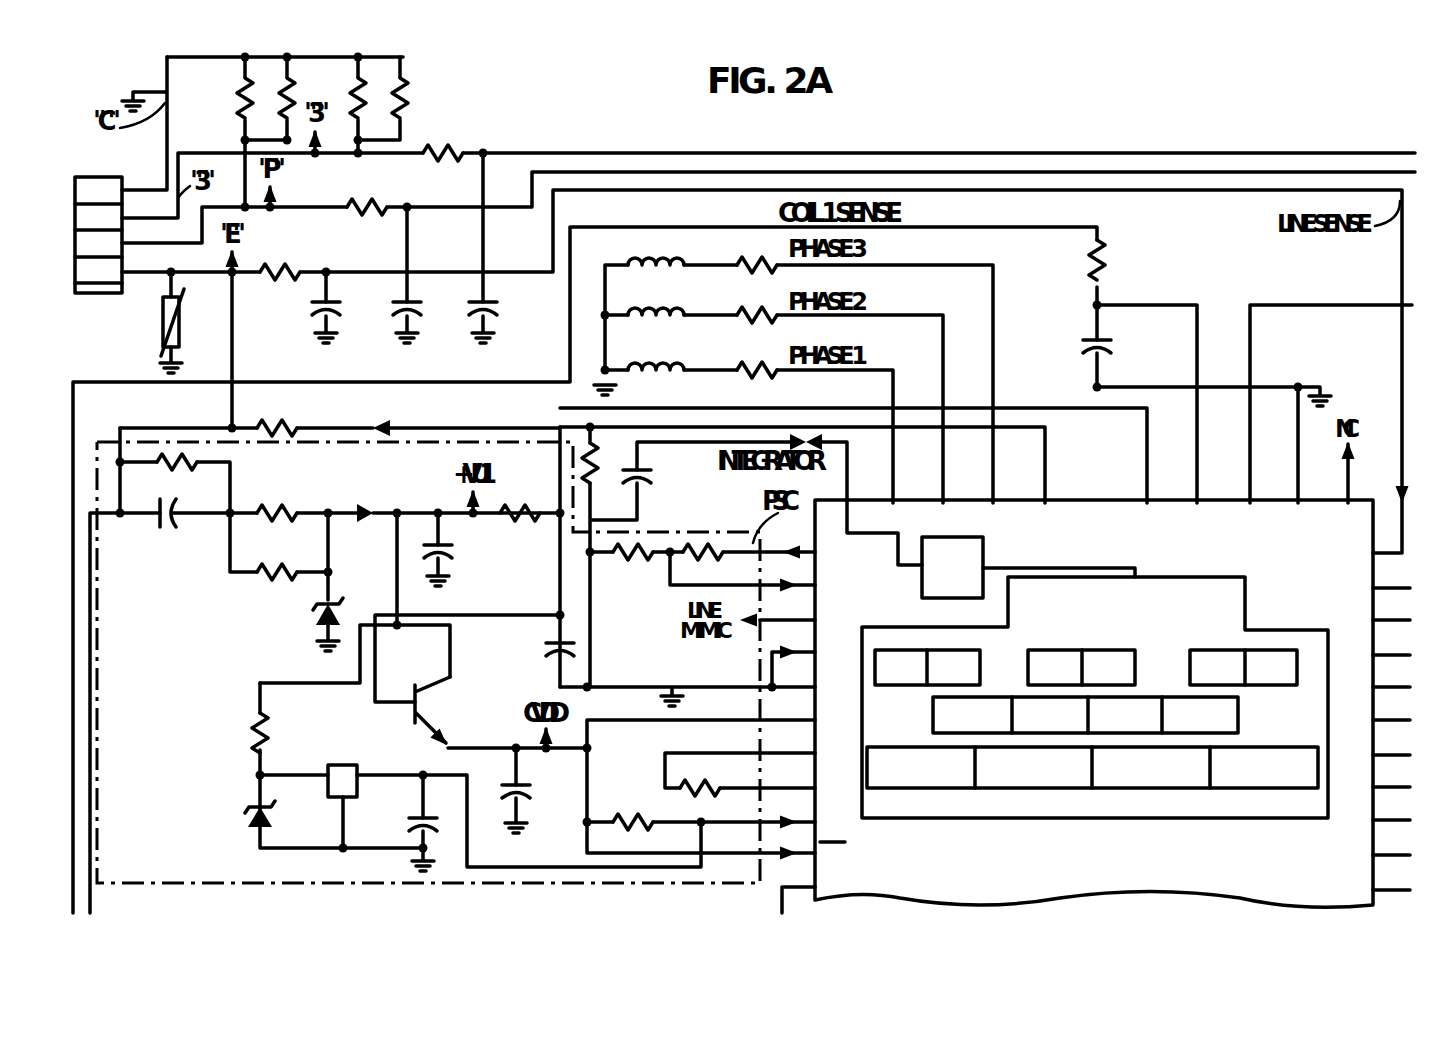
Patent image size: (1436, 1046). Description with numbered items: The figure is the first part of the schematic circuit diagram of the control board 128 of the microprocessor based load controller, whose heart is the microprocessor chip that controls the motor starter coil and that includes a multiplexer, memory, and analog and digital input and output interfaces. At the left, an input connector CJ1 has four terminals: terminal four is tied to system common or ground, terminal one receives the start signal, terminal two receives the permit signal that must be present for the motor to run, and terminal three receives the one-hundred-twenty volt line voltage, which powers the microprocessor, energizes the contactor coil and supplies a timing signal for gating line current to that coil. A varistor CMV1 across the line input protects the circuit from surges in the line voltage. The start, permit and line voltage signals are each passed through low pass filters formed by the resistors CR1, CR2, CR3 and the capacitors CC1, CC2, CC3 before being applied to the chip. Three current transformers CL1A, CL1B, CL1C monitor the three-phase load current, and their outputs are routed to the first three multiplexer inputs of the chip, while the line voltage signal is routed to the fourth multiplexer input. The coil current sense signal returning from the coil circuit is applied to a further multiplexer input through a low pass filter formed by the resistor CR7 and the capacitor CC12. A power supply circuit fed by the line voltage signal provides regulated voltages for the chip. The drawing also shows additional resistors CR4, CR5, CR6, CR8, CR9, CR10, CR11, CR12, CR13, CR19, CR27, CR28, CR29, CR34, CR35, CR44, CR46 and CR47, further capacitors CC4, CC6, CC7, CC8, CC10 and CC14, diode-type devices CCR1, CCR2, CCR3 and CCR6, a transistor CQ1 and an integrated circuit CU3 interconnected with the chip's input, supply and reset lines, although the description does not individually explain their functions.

The control board 128 is at (1237, 292).
The input connector CJ1 is at (98, 220).
The varistor CMV1 is at (163, 312).
The resistor CR1 is at (433, 150).
The resistor CR2 is at (362, 205).
The resistor CR3 is at (278, 270).
The resistor CR4 is at (753, 258).
The resistor CR5 is at (753, 307).
The resistor CR6 is at (753, 360).
The resistor CR7 is at (1095, 263).
The resistor CR8 is at (280, 425).
The resistor CR9 is at (600, 463).
The resistor CR10 is at (647, 564).
The resistor CR11 is at (705, 540).
The resistor CR12 is at (275, 505).
The resistor CR13 is at (525, 500).
The resistor CR19 is at (700, 777).
The resistor CR27 is at (630, 808).
The resistor CR28 is at (402, 106).
The resistor CR29 is at (243, 104).
The resistor CR34 is at (353, 104).
The resistor CR35 is at (243, 127).
The resistor CR44 is at (171, 430).
The resistor CR46 is at (260, 587).
The resistor CR47 is at (252, 727).
The capacitor CC1 is at (498, 305).
The capacitor CC2 is at (402, 314).
The capacitor CC3 is at (322, 308).
The capacitor CC4 is at (520, 788).
The capacitor CC6 is at (652, 485).
The capacitor CC7 is at (409, 822).
The capacitor CC8 is at (168, 534).
The capacitor CC10 is at (443, 559).
The capacitor CC12 is at (1105, 345).
The capacitor CC14 is at (548, 645).
The zener diode CCR1 is at (317, 625).
The diode CCR2 is at (365, 508).
The zener diode CCR3 is at (240, 820).
The diode CCR6 is at (380, 425).
The current transformer CL1A is at (662, 353).
The current transformer CL1B is at (662, 299).
The current transformer CL1C is at (642, 253).
The transistor CQ1 is at (445, 698).
The reset IC CU3 is at (340, 763).